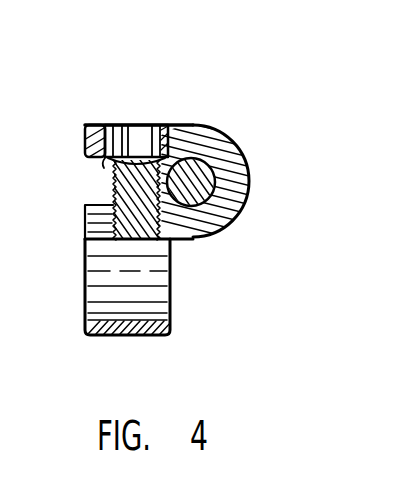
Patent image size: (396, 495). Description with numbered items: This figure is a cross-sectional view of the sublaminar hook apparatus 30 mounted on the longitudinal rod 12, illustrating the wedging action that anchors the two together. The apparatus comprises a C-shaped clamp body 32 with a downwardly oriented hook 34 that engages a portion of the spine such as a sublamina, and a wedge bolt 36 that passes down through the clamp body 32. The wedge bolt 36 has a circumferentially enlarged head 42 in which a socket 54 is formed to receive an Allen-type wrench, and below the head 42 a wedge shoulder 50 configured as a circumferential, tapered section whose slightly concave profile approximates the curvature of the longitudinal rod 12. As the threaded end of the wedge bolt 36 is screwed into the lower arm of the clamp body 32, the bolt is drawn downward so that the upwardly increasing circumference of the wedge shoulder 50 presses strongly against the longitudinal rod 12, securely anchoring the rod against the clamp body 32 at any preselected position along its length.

The sublaminar hook apparatus 30 is at (272, 113).
The clamp body 32 is at (252, 184).
The longitudinal rod 12 is at (238, 216).
The wedge bolt 36 is at (120, 124).
The socket 54 is at (145, 128).
The head 42 is at (176, 125).
The wedge shoulder 50 is at (108, 166).
The hook 34 is at (138, 291).